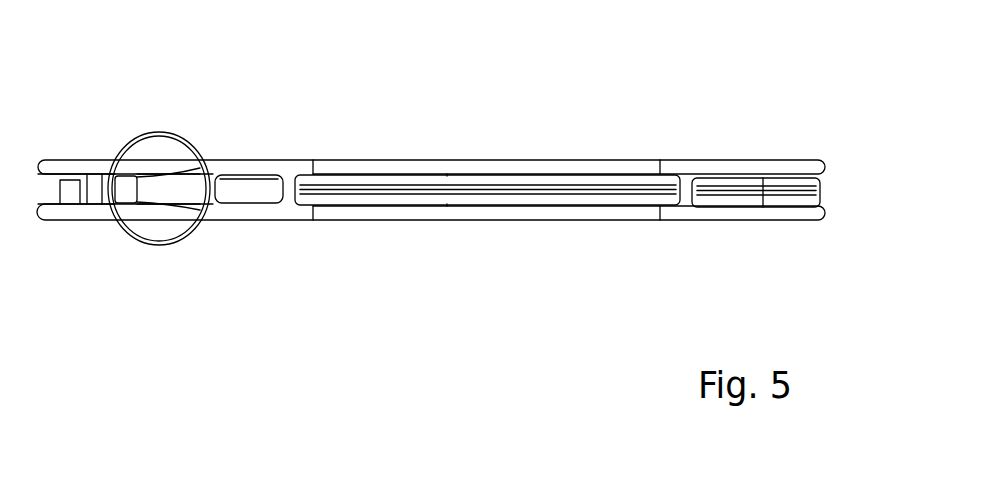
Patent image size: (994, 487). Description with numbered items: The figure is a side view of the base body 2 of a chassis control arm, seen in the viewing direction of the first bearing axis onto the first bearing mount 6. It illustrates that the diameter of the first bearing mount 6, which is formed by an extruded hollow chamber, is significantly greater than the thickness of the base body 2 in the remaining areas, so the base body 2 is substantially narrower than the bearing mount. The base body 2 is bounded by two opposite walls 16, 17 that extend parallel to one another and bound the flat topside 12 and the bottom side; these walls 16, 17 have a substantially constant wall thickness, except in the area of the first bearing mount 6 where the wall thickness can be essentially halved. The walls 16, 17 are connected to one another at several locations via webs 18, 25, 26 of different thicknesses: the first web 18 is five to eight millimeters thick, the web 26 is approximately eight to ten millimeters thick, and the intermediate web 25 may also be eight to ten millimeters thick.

The base body 2 is at (430, 175).
The topside 12 is at (462, 161).
The wall 16 is at (596, 163).
The wall 17 is at (600, 213).
The first web 18 is at (686, 185).
The first bearing mount 6 is at (135, 229).
The intermediate web 25 is at (288, 190).
The web 26 is at (212, 220).